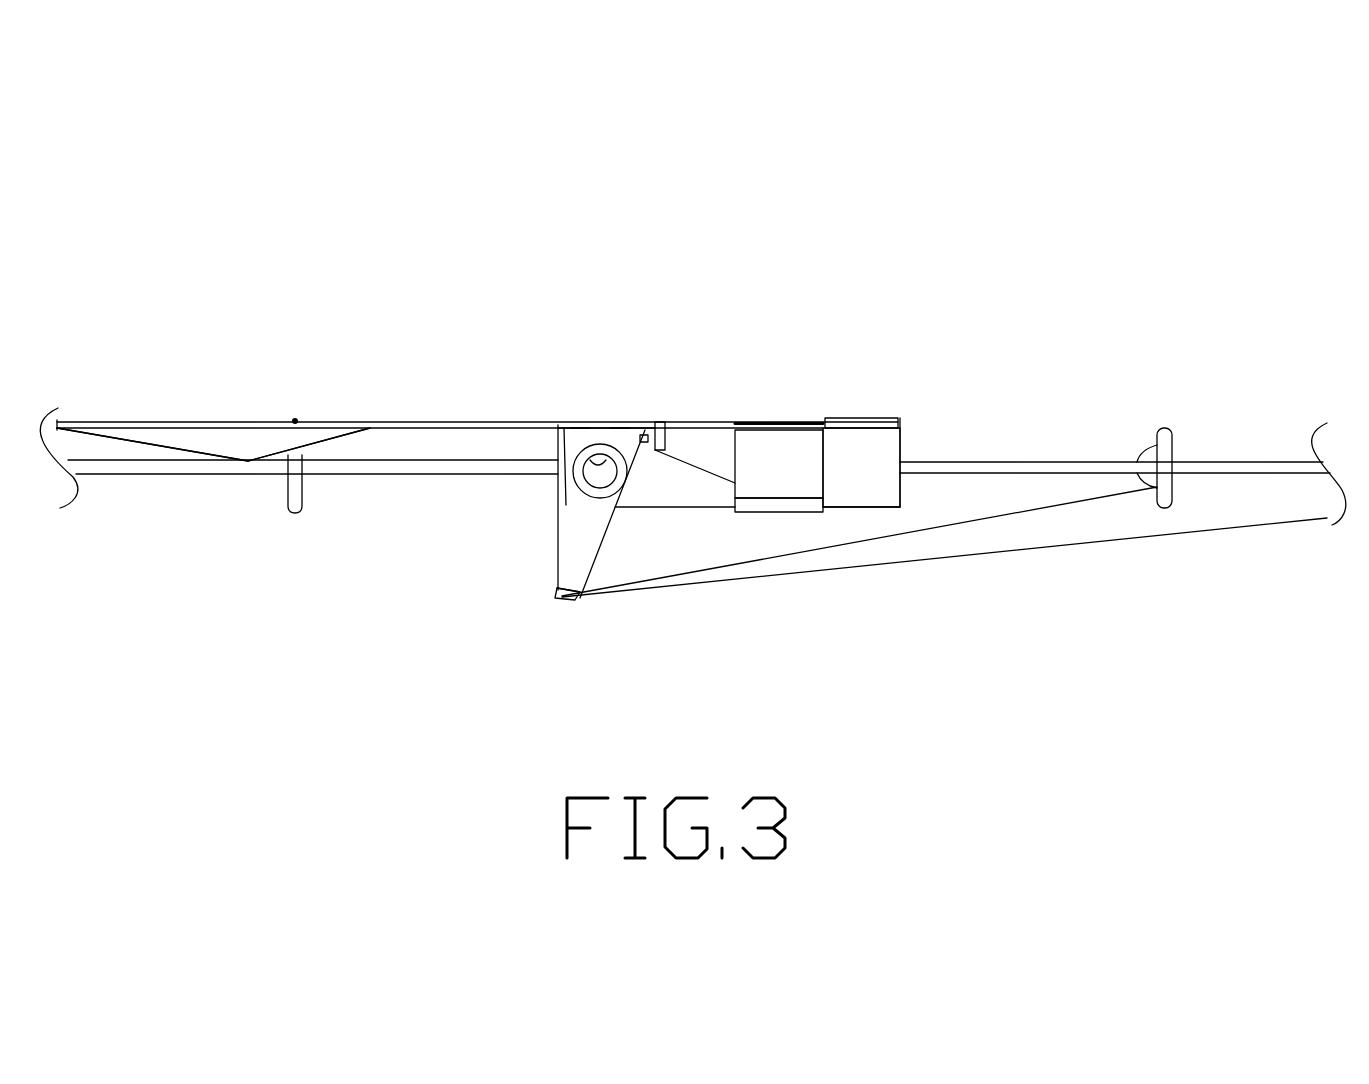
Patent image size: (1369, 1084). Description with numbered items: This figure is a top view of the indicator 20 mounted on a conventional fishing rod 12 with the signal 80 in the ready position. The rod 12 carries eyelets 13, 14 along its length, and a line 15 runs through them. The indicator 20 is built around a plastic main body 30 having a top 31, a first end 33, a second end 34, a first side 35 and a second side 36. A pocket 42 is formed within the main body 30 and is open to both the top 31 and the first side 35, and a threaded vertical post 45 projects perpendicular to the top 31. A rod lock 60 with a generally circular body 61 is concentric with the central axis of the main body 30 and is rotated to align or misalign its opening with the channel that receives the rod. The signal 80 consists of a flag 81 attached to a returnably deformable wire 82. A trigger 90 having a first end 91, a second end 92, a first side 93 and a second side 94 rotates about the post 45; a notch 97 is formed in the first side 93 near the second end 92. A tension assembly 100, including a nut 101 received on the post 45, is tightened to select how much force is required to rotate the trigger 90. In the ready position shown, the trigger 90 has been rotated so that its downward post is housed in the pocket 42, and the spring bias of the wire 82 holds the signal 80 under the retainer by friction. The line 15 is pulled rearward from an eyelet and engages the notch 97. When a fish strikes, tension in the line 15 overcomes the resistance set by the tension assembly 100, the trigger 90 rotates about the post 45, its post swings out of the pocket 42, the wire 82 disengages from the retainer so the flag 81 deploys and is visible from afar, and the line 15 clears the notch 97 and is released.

The rod 12 is at (1267, 462).
The eyelet 13 is at (295, 517).
The eyelet 14 is at (1168, 420).
The line 15 is at (1062, 500).
The indicator 20 is at (772, 420).
The main body 30 is at (692, 422).
The top 31 is at (875, 450).
The first end 33 is at (557, 450).
The second end 34 is at (900, 442).
The first side 35 is at (853, 418).
The second side 36 is at (858, 508).
The pocket 42 is at (645, 428).
The vertical post 45 is at (597, 477).
The rod lock 60 is at (776, 512).
The body 61 is at (757, 482).
The signal 80 is at (388, 423).
The flag 81 is at (232, 447).
The wire 82 is at (408, 422).
The trigger 90 is at (556, 557).
The first end 91 is at (597, 446).
The second end 92 is at (563, 603).
The first side 93 is at (557, 527).
The second side 94 is at (607, 532).
The notch 97 is at (557, 590).
The tension assembly 100 is at (580, 422).
The nut 101 is at (620, 423).